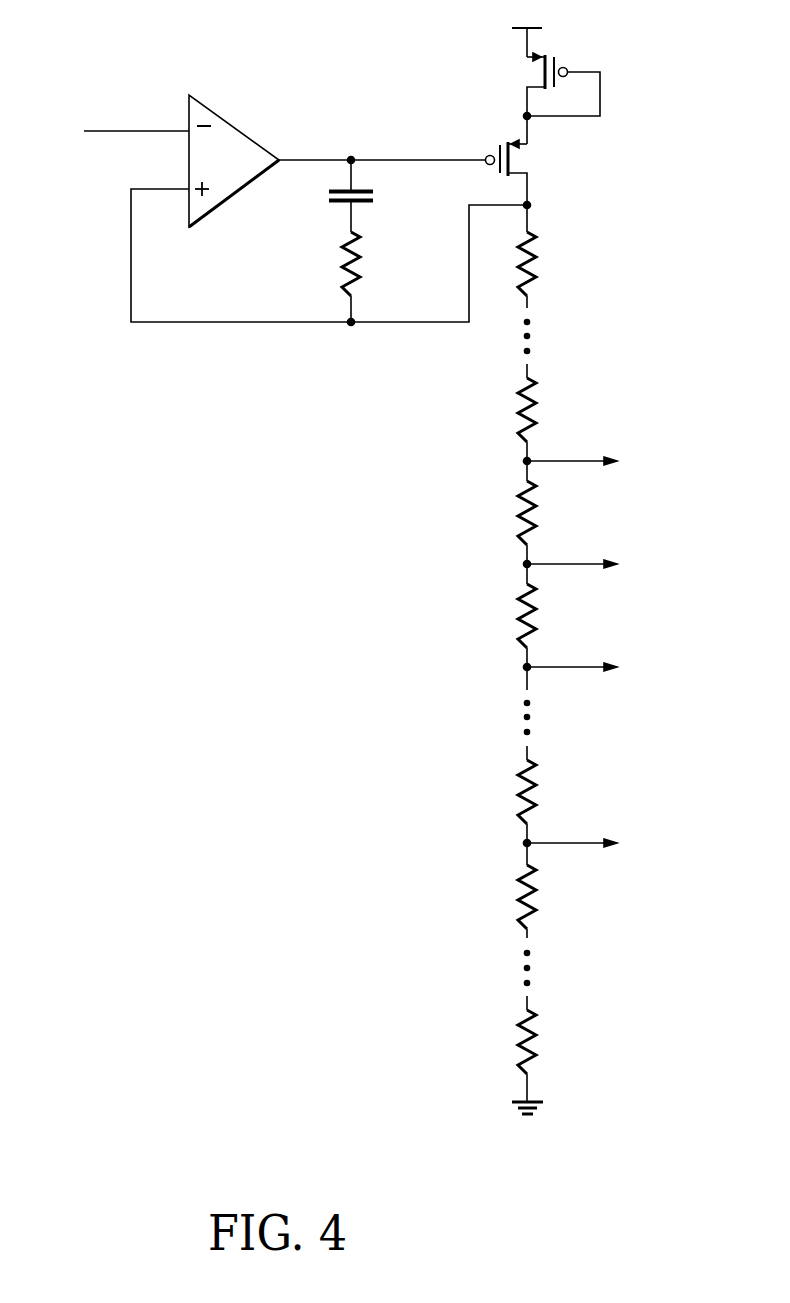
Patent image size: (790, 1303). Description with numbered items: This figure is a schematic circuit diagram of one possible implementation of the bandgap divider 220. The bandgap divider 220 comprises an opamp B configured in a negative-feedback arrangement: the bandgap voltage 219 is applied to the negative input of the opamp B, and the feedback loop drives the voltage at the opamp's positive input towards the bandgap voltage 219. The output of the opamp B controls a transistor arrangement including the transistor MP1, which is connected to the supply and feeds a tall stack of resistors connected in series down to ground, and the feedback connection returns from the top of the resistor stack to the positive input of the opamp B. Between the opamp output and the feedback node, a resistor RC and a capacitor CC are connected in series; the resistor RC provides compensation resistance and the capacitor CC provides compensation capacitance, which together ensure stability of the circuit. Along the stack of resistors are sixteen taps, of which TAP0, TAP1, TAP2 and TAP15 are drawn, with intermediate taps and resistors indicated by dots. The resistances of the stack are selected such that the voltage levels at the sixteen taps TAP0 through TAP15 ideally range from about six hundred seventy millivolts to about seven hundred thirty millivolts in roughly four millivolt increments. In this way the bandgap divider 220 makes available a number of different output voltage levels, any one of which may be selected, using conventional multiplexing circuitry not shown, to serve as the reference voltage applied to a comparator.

The bandgap voltage 219 is at (116, 131).
The bandgap divider 220 is at (296, 1172).
The opamp B is at (234, 161).
The capacitor CC is at (368, 196).
The resistor RC is at (366, 277).
The PMOS transistor MP1 is at (543, 98).
The tap TAP0 is at (597, 461).
The tap TAP1 is at (597, 564).
The tap TAP2 is at (597, 667).
The tap TAP15 is at (603, 843).